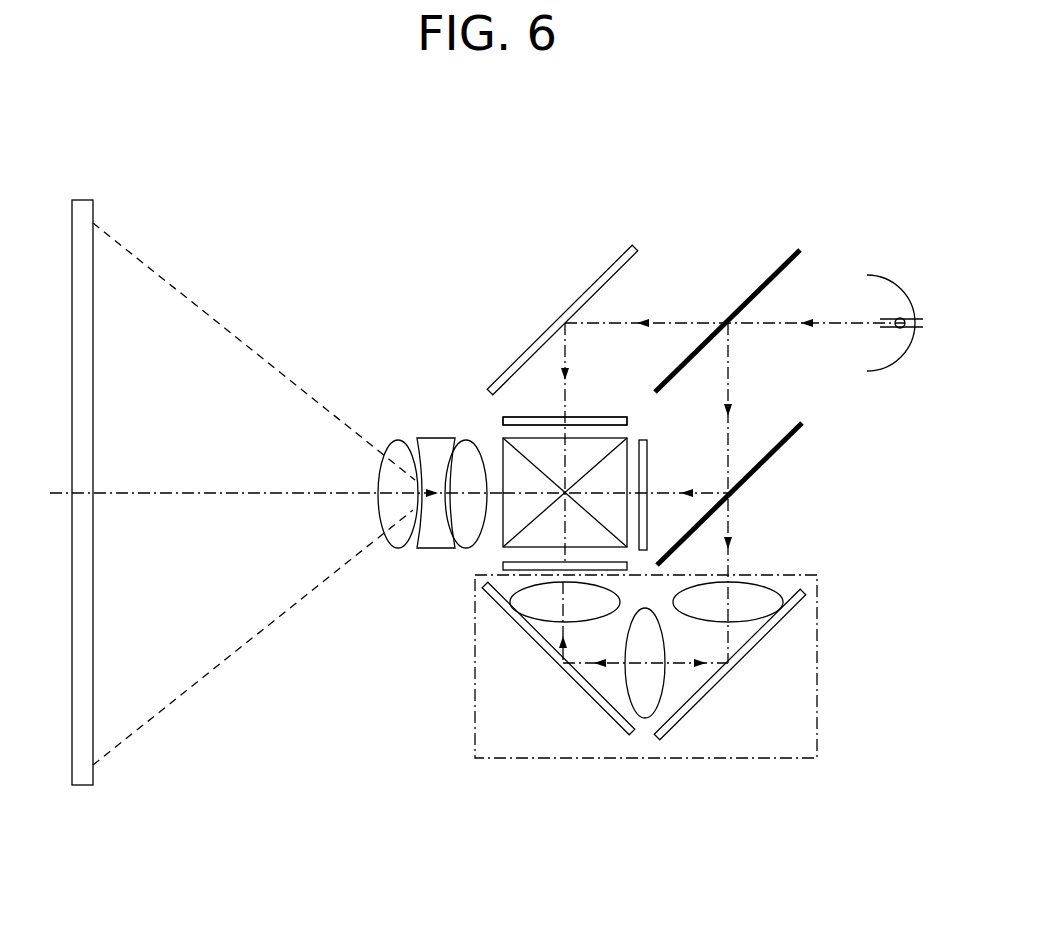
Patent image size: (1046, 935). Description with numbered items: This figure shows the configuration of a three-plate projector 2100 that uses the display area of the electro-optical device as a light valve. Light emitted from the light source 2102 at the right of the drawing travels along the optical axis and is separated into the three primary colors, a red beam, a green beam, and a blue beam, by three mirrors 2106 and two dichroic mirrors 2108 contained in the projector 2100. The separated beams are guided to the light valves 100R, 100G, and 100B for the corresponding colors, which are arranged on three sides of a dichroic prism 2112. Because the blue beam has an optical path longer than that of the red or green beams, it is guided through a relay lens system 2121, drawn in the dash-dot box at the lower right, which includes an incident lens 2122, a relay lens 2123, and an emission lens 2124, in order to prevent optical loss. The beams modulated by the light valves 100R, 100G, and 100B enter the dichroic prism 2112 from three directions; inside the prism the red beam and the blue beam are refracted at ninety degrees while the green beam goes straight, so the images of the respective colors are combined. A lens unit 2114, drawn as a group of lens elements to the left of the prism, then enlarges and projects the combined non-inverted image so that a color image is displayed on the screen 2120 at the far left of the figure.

The projector 2100 is at (768, 158).
The light source 2102 is at (897, 300).
The mirrors 2106 is at (602, 282).
The dichroic mirrors 2108 is at (767, 280).
The dichroic prism 2112 is at (517, 417).
The lens unit 2114 is at (488, 426).
The screen 2120 is at (93, 773).
The relay lens system 2121 is at (688, 664).
The incident lens 2122 is at (753, 615).
The relay lens 2123 is at (657, 703).
The emission lens 2124 is at (535, 610).
The light valve 100R is at (543, 417).
The light valve 100G is at (685, 432).
The light valve 100B is at (503, 565).